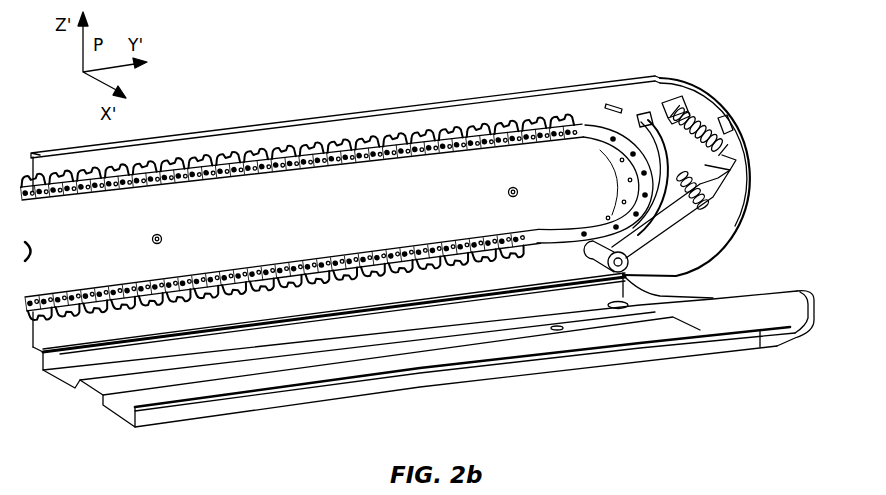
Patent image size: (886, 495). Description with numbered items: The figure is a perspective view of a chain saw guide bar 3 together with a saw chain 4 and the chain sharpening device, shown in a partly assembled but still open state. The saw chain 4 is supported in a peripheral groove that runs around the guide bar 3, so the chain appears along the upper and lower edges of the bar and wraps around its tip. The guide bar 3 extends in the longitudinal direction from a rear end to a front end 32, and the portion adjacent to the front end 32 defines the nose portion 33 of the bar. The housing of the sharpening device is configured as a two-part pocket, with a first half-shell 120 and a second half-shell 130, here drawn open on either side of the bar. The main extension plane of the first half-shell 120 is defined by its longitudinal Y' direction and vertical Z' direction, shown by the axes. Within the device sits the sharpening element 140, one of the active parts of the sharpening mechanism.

The guide bar 3 is at (289, 249).
The saw chain 4 is at (232, 160).
The first half-shell 120 is at (358, 135).
The nose portion 33 is at (607, 181).
The front end 32 is at (634, 176).
The sharpening element 140 is at (700, 201).
The second half-shell 130 is at (713, 313).